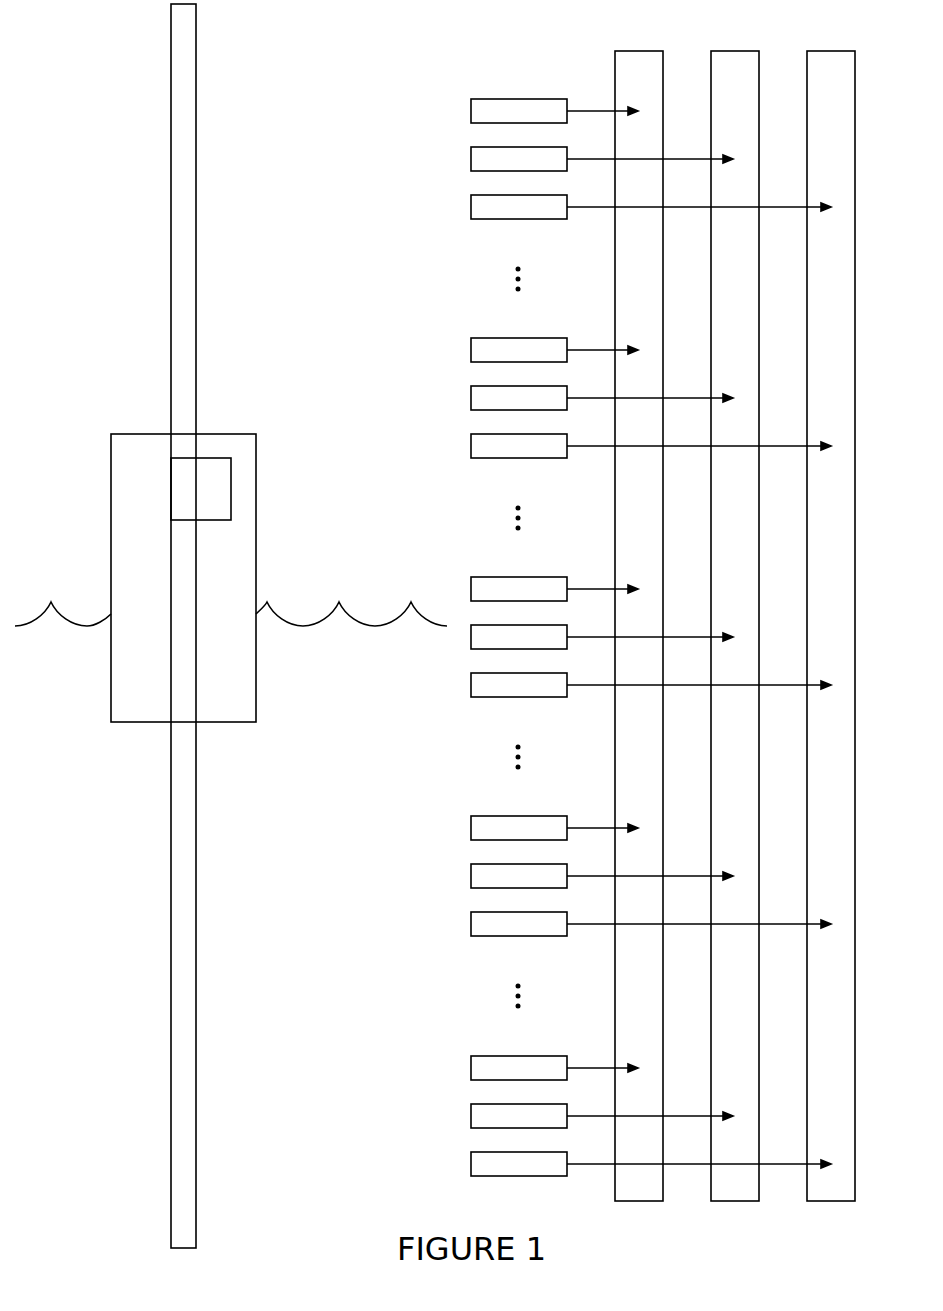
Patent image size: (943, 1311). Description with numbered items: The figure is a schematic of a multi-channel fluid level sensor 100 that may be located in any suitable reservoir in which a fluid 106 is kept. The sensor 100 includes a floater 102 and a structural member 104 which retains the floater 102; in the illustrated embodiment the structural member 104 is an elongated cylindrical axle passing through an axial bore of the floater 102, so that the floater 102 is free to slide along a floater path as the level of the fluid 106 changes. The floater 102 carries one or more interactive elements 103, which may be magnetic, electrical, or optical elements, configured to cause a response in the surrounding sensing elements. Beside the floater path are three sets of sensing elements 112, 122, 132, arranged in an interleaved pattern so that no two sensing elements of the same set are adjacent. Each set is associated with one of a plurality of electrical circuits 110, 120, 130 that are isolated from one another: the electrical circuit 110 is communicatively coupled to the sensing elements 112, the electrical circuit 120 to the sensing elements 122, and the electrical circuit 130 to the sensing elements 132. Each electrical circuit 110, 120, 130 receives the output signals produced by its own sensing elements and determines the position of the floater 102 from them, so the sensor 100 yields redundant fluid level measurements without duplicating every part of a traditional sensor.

The fluid level sensor 100 is at (352, 85).
The floater 102 is at (206, 609).
The interactive elements 103 is at (217, 500).
The structural member 104 is at (171, 75).
The fluid 106 is at (373, 712).
The electrical circuit 110 is at (627, 51).
The electrical circuit 120 is at (723, 51).
The electrical circuit 130 is at (819, 51).
The sensing elements 112 is at (533, 122).
The sensing elements 122 is at (533, 170).
The sensing elements 132 is at (533, 218).